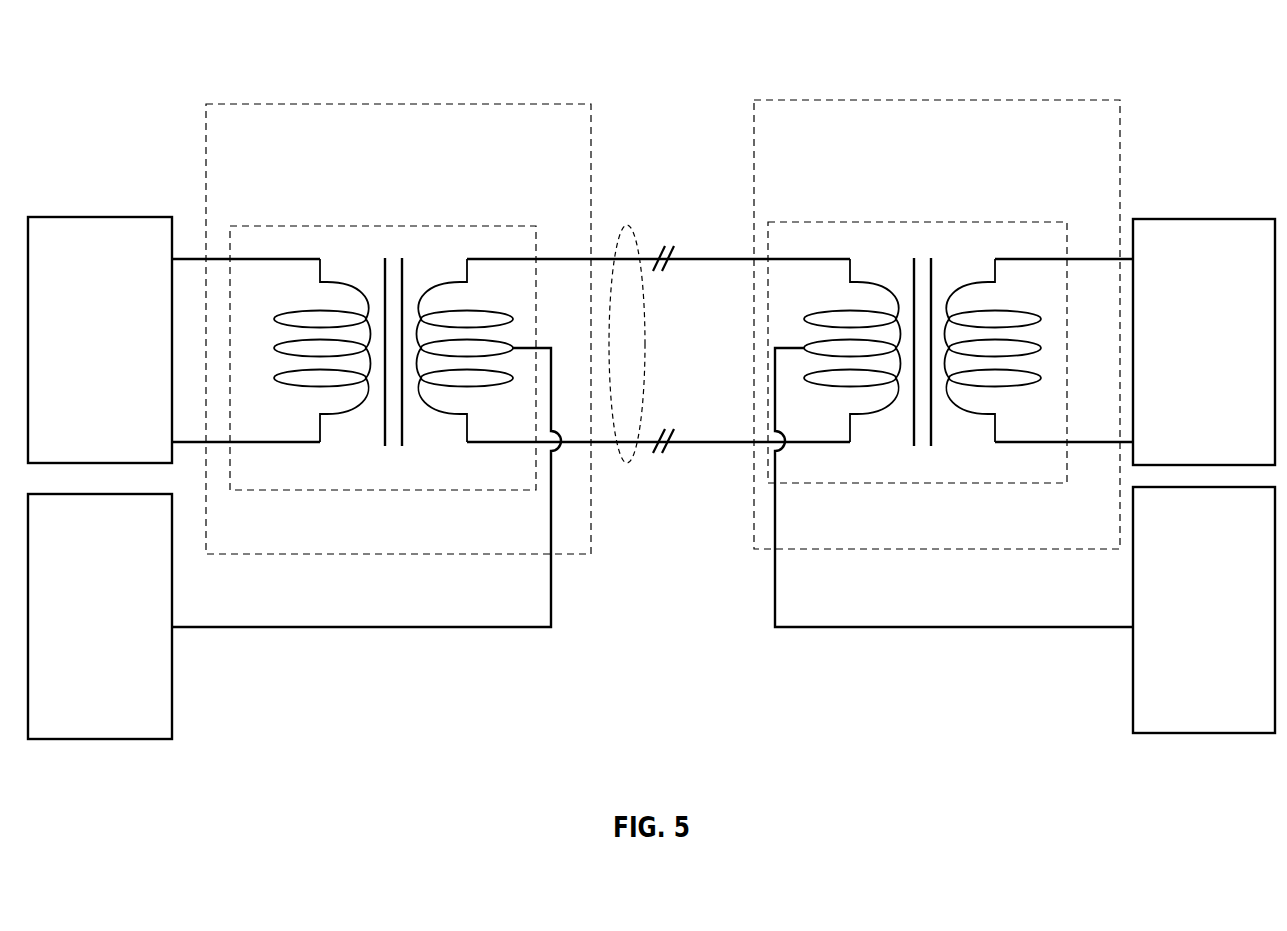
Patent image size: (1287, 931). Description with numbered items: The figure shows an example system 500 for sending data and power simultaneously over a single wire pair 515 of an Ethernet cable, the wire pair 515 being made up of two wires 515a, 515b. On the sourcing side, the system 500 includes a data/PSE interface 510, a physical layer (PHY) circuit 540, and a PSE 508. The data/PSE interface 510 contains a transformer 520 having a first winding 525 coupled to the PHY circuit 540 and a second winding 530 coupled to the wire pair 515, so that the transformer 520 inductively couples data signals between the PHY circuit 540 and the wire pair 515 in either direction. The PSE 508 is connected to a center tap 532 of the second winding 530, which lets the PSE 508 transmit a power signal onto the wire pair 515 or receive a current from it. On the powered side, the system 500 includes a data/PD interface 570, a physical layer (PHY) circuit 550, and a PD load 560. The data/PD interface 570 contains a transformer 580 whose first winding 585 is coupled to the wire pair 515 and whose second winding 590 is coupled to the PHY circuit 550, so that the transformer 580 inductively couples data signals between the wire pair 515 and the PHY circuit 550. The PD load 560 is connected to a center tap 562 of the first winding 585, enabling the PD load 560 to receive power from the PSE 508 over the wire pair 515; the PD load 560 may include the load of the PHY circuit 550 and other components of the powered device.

The system 500 is at (1206, 49).
The PSE 508 is at (80, 740).
The data/PSE interface 510 is at (591, 143).
The wire pair 515 is at (634, 236).
The wire 515a is at (677, 259).
The wire 515b is at (673, 446).
The transformer 520 is at (383, 226).
The first winding 525 is at (297, 293).
The second winding 530 is at (473, 289).
The center tap 532 is at (513, 348).
The physical layer (PHY) circuit 540 is at (65, 216).
The physical layer (PHY) circuit 550 is at (1157, 218).
The PD load 560 is at (1183, 733).
The center tap 562 is at (804, 347).
The data/PD interface 570 is at (1120, 128).
The transformer 580 is at (910, 222).
The first winding 585 is at (832, 293).
The second winding 590 is at (1001, 294).